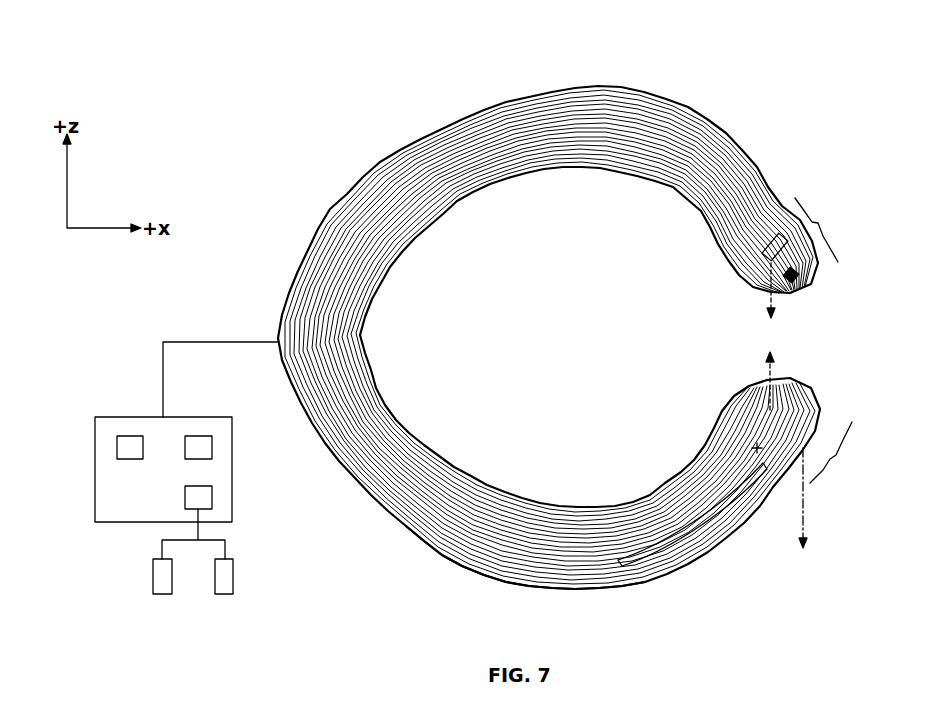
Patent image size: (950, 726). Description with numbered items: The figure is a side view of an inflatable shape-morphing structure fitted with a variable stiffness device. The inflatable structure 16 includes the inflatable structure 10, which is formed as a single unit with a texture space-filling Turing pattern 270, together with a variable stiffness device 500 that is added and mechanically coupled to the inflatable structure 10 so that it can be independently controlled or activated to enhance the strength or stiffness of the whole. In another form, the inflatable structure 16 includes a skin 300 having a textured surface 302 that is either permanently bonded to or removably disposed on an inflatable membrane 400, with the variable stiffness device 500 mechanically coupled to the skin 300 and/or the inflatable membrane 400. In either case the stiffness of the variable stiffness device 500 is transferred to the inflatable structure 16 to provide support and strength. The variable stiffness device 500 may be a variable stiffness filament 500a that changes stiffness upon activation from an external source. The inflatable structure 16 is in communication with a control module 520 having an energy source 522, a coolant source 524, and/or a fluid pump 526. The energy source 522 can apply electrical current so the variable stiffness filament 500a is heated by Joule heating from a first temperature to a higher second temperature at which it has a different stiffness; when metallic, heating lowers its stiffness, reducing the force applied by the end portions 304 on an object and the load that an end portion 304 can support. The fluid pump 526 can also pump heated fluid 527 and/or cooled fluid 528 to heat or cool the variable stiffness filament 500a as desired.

The inflatable structure 10 is at (670, 95).
The inflatable structure 16 is at (465, 56).
The texture space-filling Turing pattern 270 is at (452, 580).
The skin 300 is at (380, 158).
The textured surface 302 is at (327, 205).
The end portion 304 is at (821, 340).
The inflatable membrane 400 is at (405, 252).
The variable stiffness device 500 is at (722, 538).
The variable stiffness filament 500a is at (686, 492).
The control module 520 is at (124, 408).
The energy source 522 is at (117, 455).
The coolant source 524 is at (212, 453).
The fluid pump 526 is at (212, 505).
The heated fluid 527 is at (153, 578).
The cooled fluid 528 is at (233, 575).